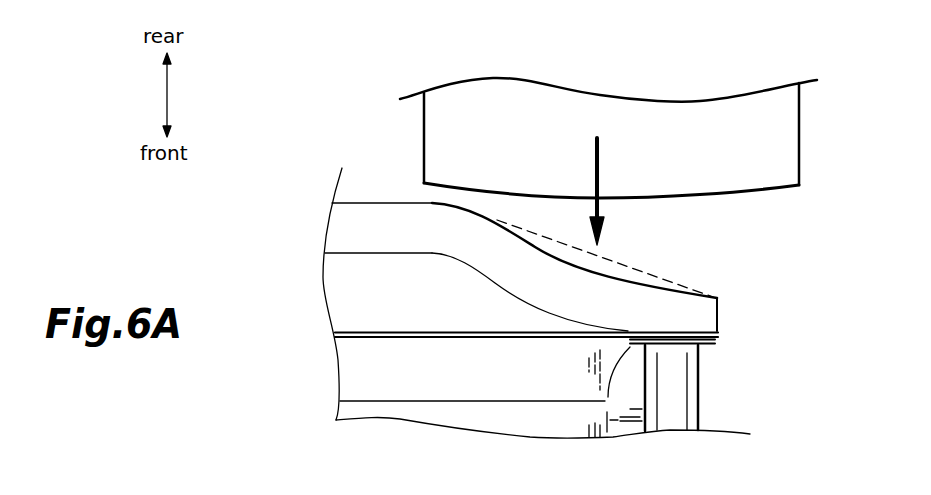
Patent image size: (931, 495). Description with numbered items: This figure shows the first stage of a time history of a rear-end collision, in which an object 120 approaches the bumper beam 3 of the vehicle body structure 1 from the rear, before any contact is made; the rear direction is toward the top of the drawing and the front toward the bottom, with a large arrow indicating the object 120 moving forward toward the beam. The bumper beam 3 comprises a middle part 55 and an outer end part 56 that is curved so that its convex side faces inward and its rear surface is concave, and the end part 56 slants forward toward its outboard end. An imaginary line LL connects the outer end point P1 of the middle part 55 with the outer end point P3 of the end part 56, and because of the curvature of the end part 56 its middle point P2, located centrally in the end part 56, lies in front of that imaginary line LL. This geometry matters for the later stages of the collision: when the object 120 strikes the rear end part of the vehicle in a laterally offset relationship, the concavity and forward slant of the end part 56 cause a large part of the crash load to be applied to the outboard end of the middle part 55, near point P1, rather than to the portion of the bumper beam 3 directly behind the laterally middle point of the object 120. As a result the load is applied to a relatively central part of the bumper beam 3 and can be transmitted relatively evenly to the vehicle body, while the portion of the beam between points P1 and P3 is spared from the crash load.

The vehicle body structure 1 is at (733, 288).
The bumper beam 3 is at (372, 200).
The middle part 55 is at (340, 227).
The end part 56 is at (618, 287).
The object 120 is at (500, 98).
The outer end point of the middle part P1 is at (433, 205).
The middle point of the outer end part P2 is at (557, 268).
The outer end point of the outer end part P3 is at (713, 299).
The imaginary line LL is at (652, 274).